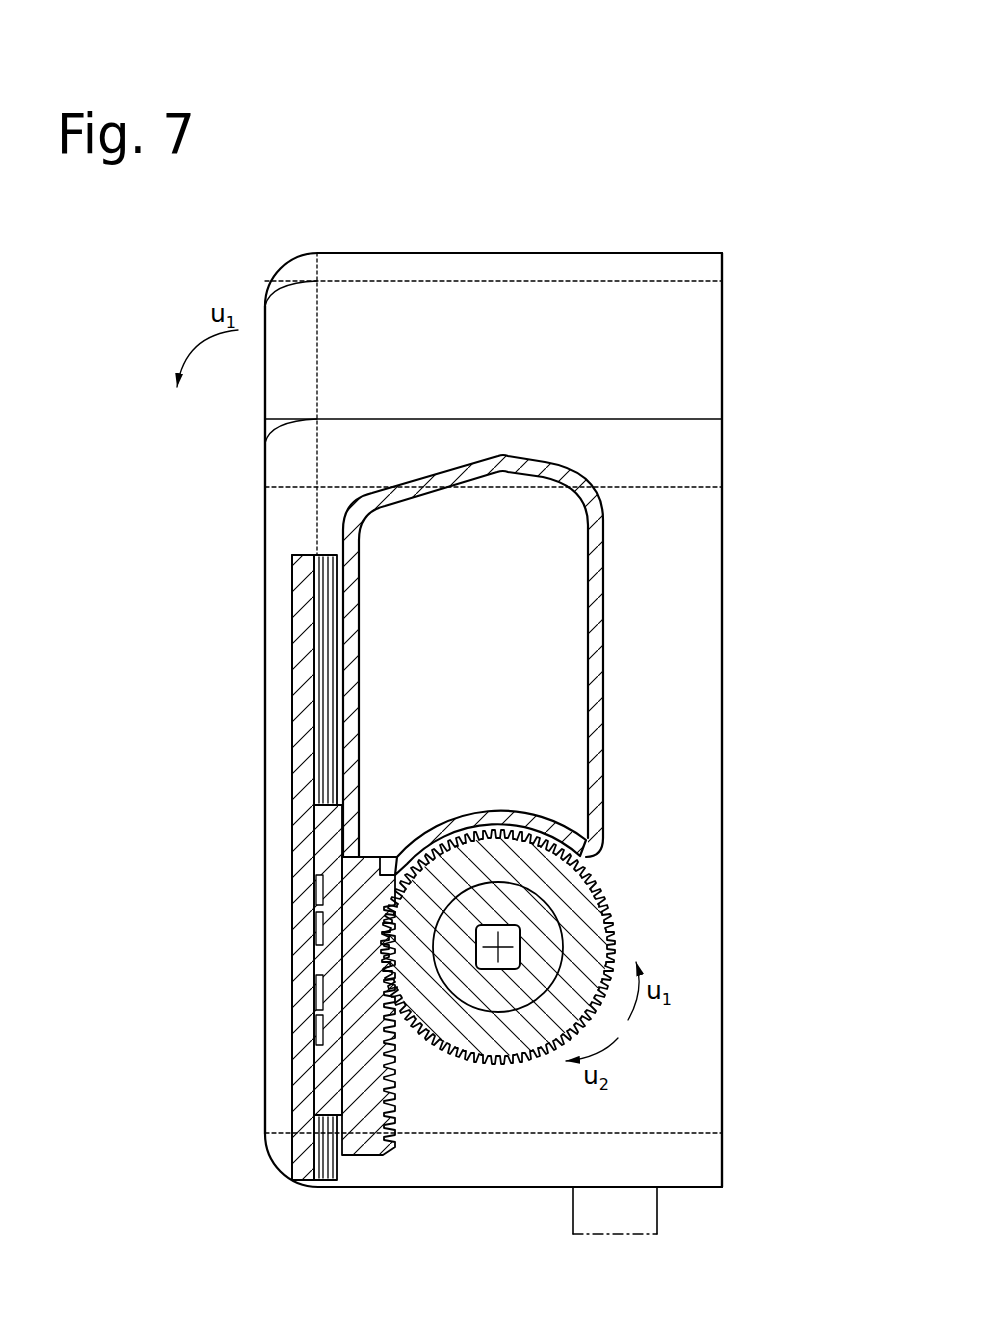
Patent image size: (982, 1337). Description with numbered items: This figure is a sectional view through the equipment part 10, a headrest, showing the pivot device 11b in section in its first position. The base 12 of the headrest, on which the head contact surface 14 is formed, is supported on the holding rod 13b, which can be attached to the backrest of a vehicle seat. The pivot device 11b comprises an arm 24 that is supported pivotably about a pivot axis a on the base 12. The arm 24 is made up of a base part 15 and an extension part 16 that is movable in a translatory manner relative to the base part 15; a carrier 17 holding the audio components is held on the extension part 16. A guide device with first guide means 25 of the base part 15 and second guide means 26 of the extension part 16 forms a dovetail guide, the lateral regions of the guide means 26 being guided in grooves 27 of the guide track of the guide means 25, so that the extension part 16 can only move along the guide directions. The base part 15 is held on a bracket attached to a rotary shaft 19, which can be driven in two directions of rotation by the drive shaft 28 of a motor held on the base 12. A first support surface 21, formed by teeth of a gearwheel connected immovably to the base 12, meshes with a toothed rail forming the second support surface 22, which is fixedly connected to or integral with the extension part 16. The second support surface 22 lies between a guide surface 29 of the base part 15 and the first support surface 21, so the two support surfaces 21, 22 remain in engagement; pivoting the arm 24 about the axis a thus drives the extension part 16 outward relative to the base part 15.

The equipment part 10 is at (820, 163).
The base 12 is at (626, 267).
The head contact surface 14 is at (265, 517).
The pivot device 11b is at (613, 686).
The holding rod 13b is at (637, 1215).
The base part 15 is at (305, 937).
The arm 24 is at (283, 585).
The guide surface 29 is at (332, 604).
The grooves 27 is at (322, 638).
The first guide means 25 is at (318, 702).
The second guide means 26 is at (322, 817).
The extension part 16 is at (398, 1080).
The second support surface 22 is at (377, 1053).
The carrier 17 is at (603, 570).
The drive shaft 28 is at (520, 923).
The first support surface 21 is at (622, 933).
The rotary shaft 19 is at (541, 953).
The pivot axis a is at (508, 933).